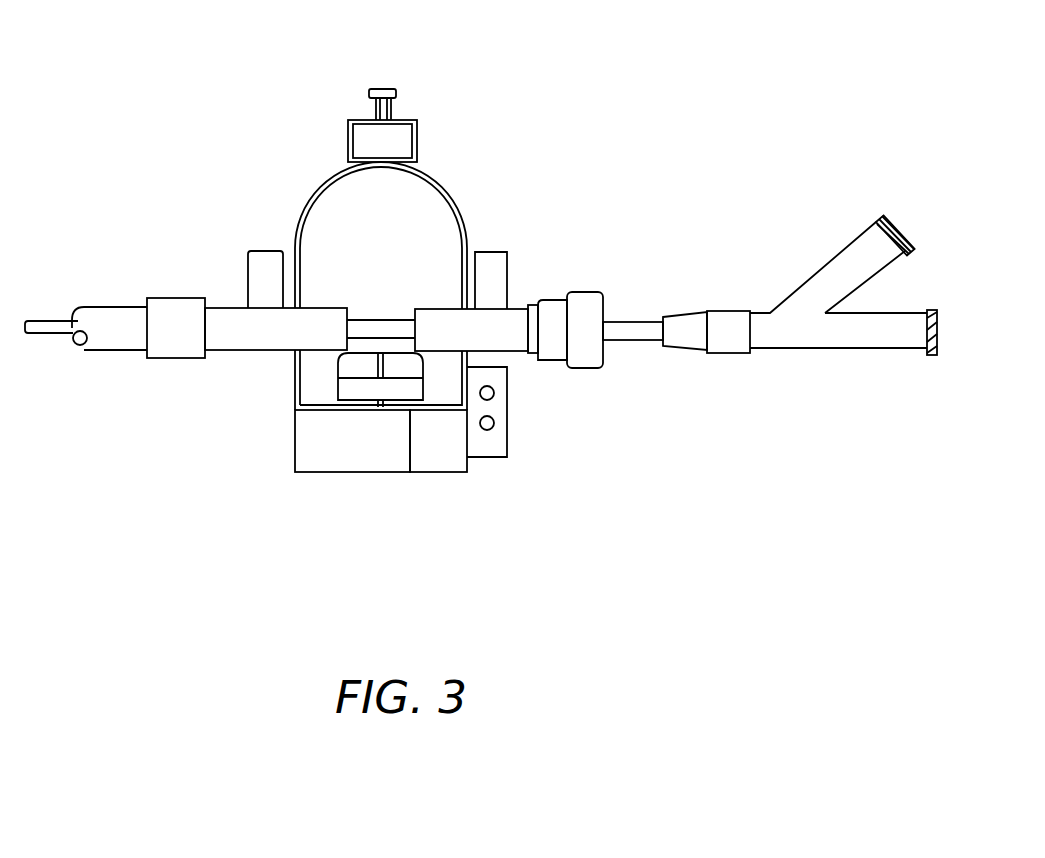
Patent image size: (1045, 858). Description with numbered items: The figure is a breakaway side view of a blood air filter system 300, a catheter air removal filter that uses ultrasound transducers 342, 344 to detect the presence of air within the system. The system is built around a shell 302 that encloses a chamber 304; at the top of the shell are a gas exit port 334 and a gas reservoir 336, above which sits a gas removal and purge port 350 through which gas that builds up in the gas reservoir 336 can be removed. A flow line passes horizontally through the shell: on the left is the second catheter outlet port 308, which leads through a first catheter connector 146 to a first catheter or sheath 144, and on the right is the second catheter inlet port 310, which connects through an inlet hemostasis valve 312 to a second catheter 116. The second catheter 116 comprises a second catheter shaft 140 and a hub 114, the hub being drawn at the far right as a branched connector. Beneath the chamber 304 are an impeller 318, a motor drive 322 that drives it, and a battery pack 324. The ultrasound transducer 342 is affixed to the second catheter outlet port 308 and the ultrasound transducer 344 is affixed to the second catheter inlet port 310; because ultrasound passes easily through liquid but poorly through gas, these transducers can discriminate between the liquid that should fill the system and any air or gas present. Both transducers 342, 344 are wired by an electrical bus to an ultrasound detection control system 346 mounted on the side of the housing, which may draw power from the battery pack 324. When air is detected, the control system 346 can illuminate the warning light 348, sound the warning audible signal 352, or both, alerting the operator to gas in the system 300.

The blood air filter system 300 is at (160, 132).
The shell 302 is at (465, 208).
The chamber 304 is at (415, 207).
The gas exit port 334 is at (380, 160).
The gas reservoir 336 is at (402, 138).
The gas removal and purge port 350 is at (387, 92).
The ultrasound transducer 342 is at (270, 262).
The ultrasound transducer 344 is at (493, 275).
The second catheter outlet port 308 is at (228, 320).
The second catheter inlet port 310 is at (497, 332).
The inlet hemostasis valve 312 is at (587, 348).
The second catheter 116 is at (627, 330).
The hub 114 is at (848, 267).
The first catheter or sheath 144 is at (117, 313).
The first catheter connector 146 is at (173, 330).
The second catheter shaft 140 is at (37, 328).
The impeller 318 is at (382, 383).
The motor drive 322 is at (378, 455).
The battery pack 324 is at (445, 450).
The ultrasound detection control system 346 is at (498, 396).
The warning light 348 is at (503, 412).
The warning audible signal 352 is at (490, 428).